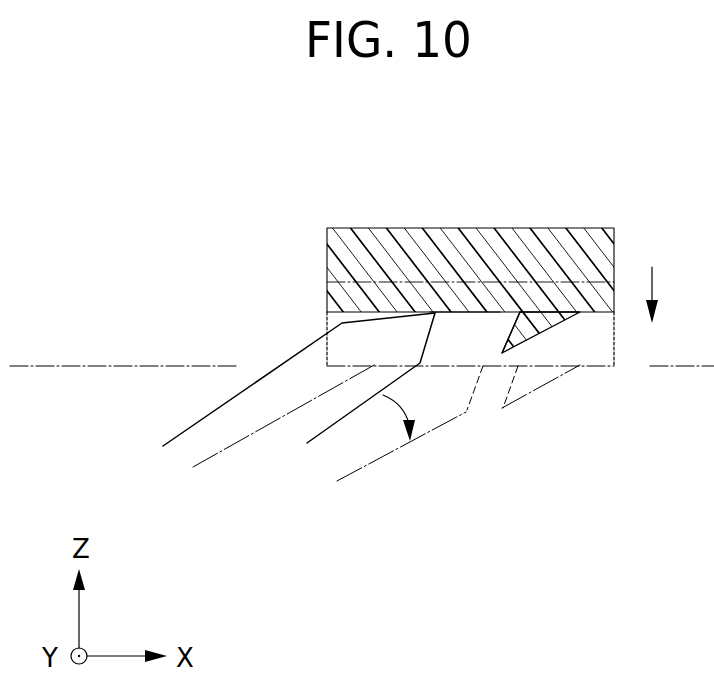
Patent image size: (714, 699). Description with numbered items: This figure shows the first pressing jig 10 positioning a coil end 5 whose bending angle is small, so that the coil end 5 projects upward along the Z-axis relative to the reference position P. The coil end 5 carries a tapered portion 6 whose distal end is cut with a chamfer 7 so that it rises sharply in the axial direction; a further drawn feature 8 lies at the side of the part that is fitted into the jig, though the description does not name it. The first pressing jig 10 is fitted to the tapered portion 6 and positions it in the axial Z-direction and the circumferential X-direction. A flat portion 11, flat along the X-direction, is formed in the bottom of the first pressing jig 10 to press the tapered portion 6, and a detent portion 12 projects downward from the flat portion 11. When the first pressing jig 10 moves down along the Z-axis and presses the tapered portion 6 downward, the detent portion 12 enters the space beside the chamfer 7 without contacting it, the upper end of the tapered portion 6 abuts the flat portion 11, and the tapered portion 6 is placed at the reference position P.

The reference position P is at (158, 366).
The coil end 5 is at (285, 433).
The tapered portion 6 is at (293, 383).
The chamfer 7 is at (432, 332).
The chip face 8 is at (510, 338).
The first pressing jig 10 is at (556, 243).
The flat portion 11 is at (460, 311).
The detent portion 12 is at (535, 329).